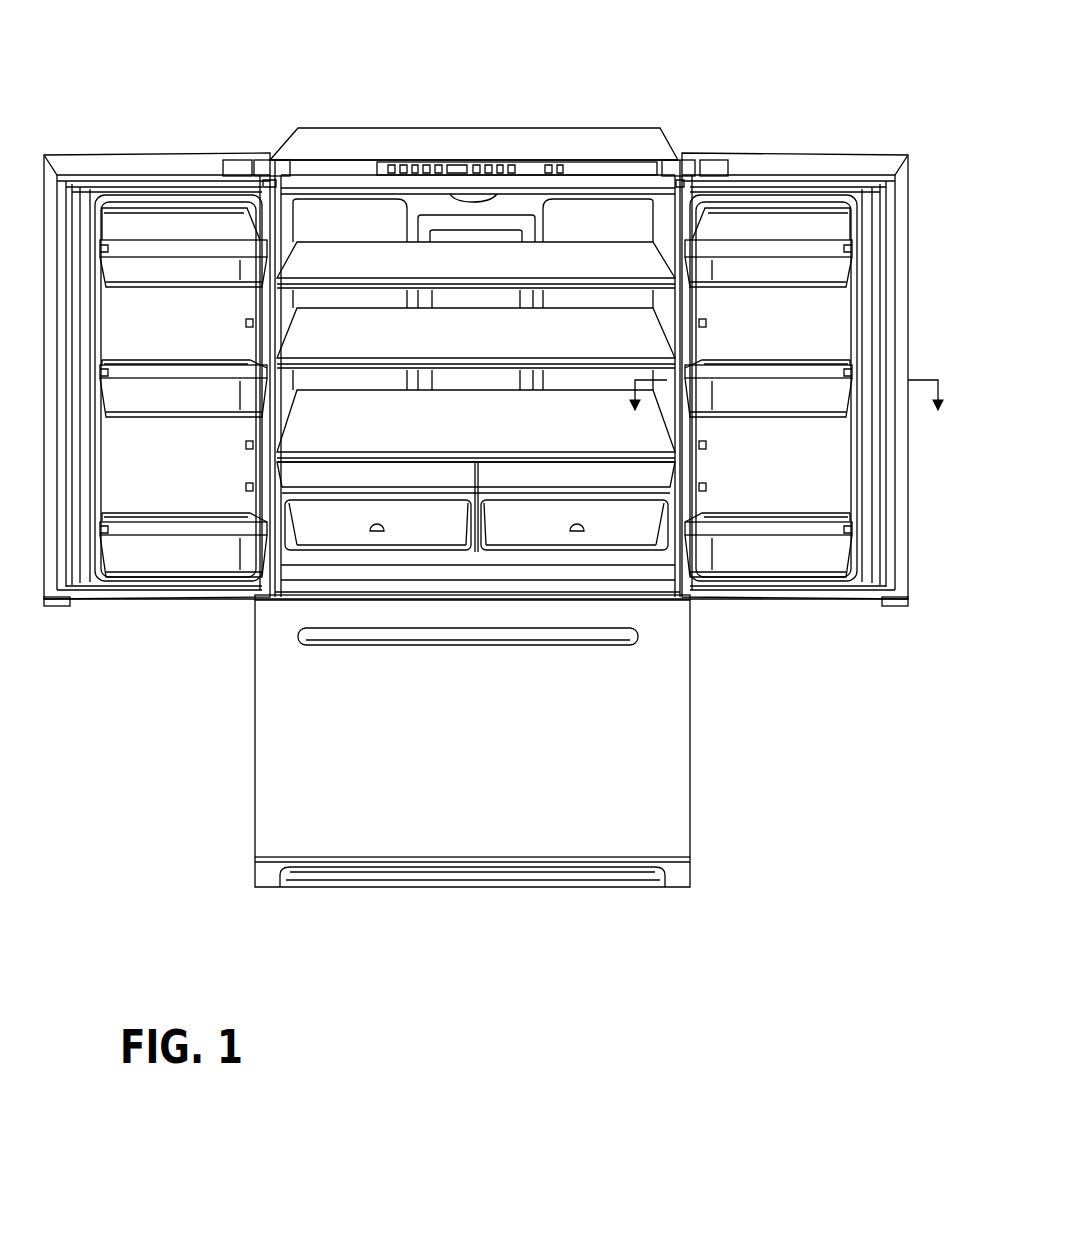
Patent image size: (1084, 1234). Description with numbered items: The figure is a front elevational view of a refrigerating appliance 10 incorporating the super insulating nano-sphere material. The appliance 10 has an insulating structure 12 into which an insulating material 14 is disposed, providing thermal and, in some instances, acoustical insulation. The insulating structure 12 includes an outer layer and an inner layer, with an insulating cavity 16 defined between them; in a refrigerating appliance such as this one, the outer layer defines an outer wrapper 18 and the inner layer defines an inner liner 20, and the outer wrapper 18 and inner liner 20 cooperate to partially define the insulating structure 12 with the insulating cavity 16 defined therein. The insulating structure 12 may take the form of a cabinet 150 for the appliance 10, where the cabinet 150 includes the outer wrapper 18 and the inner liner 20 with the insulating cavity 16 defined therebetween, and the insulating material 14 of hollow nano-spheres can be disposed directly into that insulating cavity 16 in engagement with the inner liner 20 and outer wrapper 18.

The appliance 10 is at (346, 86).
The insulating structure 12 is at (485, 125).
The insulating material 14 is at (327, 167).
The insulating cavity 16 is at (598, 165).
The outer wrapper 18 is at (375, 152).
The inner liner 20 is at (283, 395).
The cabinet 150 is at (686, 144).